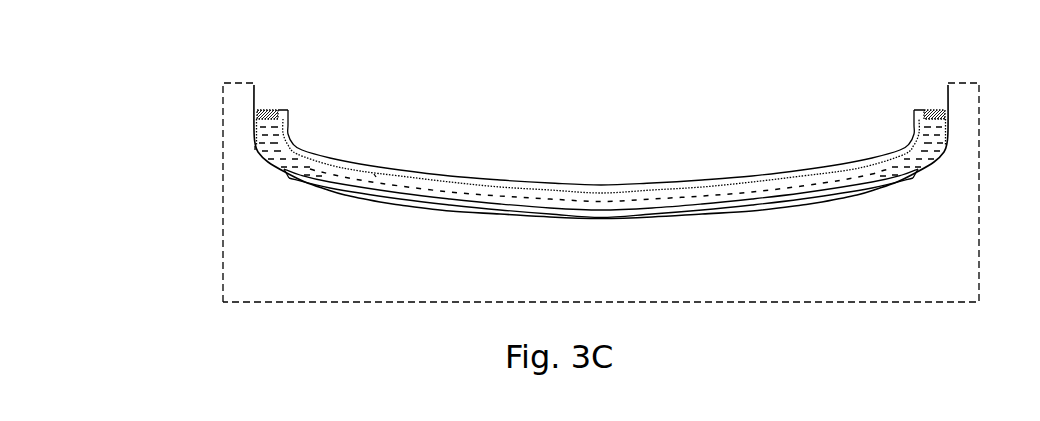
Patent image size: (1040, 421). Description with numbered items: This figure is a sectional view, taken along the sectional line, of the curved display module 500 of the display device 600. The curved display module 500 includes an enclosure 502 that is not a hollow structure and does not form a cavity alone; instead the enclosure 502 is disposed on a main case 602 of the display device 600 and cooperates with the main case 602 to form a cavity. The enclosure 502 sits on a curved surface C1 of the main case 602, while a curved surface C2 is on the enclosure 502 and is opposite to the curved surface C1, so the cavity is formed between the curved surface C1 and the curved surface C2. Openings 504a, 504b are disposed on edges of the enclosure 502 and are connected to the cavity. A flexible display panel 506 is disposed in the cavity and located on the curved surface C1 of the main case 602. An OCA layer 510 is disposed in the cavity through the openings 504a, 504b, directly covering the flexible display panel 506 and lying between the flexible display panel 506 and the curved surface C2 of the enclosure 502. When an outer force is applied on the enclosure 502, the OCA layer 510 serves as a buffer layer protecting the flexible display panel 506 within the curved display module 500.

The curved display module 500 is at (222, 64).
The enclosure 502 is at (582, 190).
The opening 504a is at (263, 109).
The opening 504b is at (935, 110).
The flexible display panel 506 is at (820, 205).
The OCA layer 510 is at (843, 182).
The display device 600 is at (182, 249).
The main case 602 is at (223, 198).
The curved surface C1 is at (256, 148).
The curved surface C2 is at (375, 175).